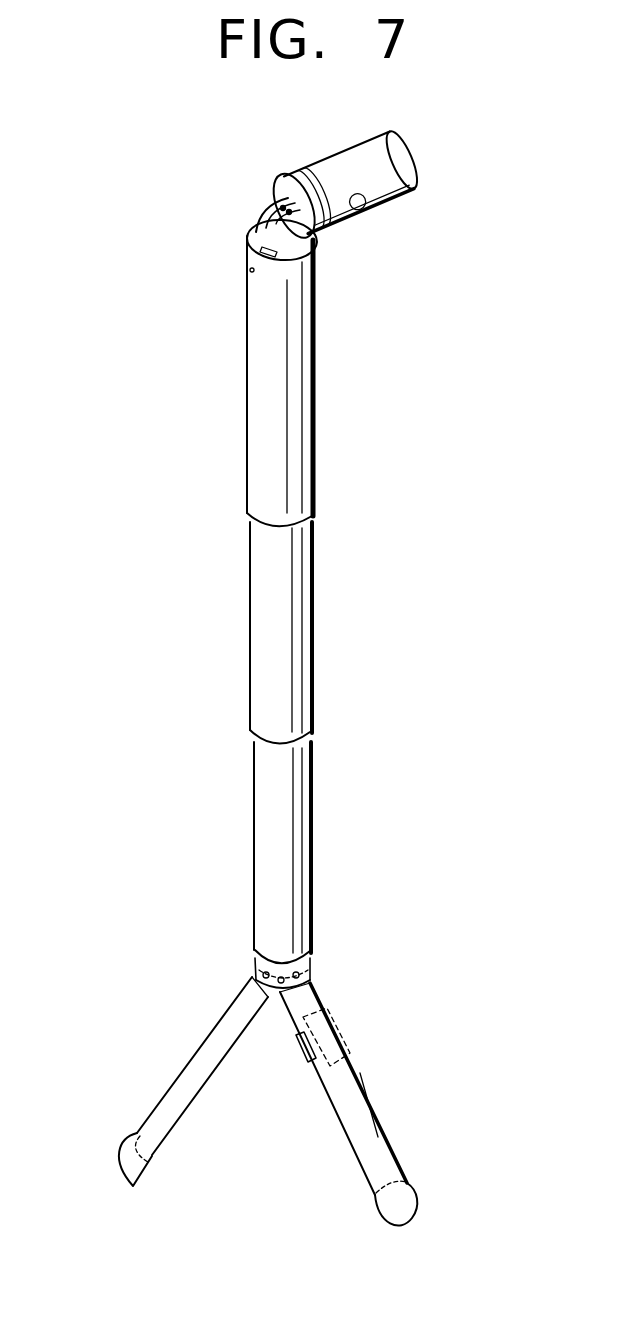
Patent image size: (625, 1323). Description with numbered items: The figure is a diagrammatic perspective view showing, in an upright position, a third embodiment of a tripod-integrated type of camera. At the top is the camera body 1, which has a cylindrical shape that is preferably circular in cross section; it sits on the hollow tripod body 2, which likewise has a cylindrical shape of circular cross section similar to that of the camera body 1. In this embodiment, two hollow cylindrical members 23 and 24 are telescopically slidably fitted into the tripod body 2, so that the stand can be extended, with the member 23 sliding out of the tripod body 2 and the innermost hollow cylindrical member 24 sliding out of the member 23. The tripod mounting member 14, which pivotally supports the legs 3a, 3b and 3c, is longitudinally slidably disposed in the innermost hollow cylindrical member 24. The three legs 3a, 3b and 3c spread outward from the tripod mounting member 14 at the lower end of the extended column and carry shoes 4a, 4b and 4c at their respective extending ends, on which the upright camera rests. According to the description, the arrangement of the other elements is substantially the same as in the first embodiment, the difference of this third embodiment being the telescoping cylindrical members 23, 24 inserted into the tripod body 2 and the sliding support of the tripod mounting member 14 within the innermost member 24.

The camera body 1 is at (380, 175).
The tripod body 2 is at (295, 420).
The hollow cylindrical member 23 is at (295, 608).
The innermost hollow cylindrical member 24 is at (298, 817).
The tripod mounting member 14 is at (302, 962).
The leg 3a is at (333, 1003).
The leg 3b is at (353, 1122).
The leg 3c is at (170, 1105).
The shoe 4a is at (348, 1042).
The shoe 4b is at (423, 1198).
The shoe 4c is at (120, 1170).